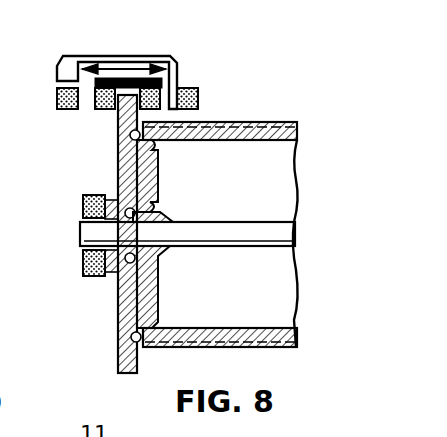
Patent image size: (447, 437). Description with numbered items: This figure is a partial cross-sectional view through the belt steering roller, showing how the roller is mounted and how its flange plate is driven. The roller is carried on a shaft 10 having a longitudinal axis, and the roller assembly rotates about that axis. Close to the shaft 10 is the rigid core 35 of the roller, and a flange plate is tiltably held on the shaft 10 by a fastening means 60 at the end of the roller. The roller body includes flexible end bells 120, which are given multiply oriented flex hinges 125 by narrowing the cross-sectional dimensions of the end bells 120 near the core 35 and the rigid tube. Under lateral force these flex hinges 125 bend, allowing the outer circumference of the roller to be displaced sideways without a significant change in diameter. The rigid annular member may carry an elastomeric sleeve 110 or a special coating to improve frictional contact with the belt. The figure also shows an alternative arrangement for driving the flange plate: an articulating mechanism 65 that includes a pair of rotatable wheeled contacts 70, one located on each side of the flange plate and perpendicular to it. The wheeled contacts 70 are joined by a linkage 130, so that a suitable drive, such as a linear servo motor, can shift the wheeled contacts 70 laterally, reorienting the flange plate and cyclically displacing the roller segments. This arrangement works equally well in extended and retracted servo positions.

The shaft 10 is at (283, 236).
The rigid core 35 is at (158, 218).
The fastening means 60 is at (114, 280).
The articulating mechanism 65 is at (113, 45).
The rotatable wheeled contacts 70 is at (184, 88).
The elastomeric sleeve 110 is at (232, 122).
The flexible end bells 120 is at (158, 181).
The flex hinges 125 is at (158, 323).
The linkage 130 is at (70, 62).